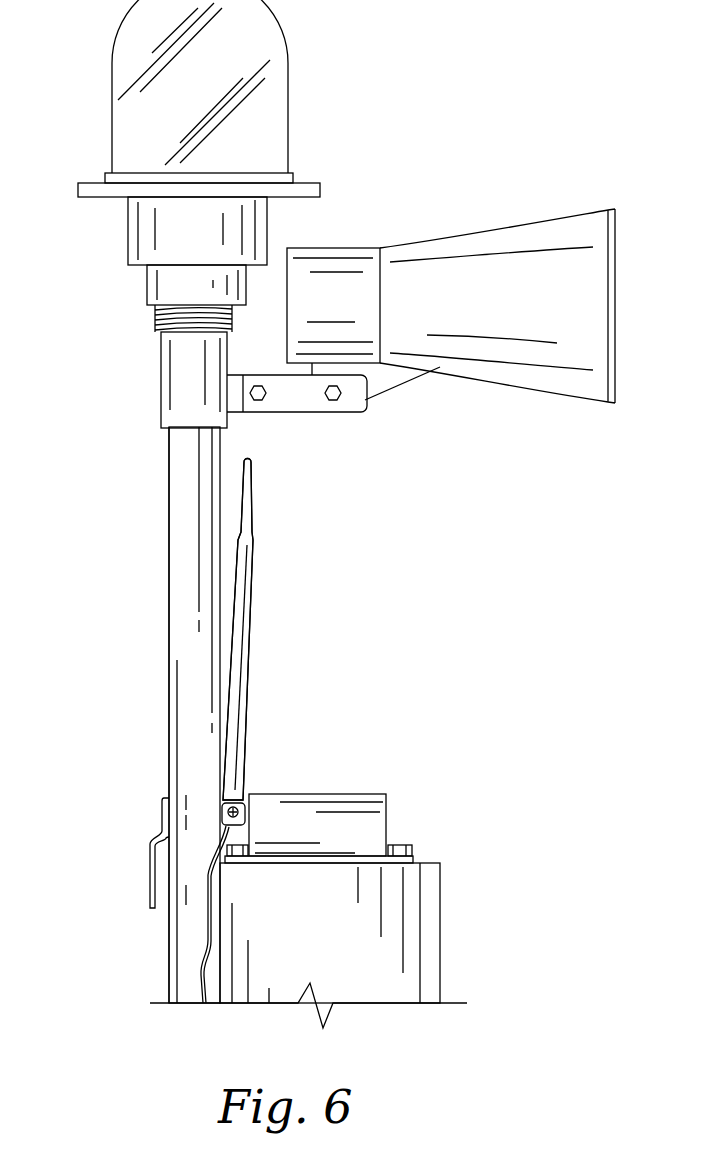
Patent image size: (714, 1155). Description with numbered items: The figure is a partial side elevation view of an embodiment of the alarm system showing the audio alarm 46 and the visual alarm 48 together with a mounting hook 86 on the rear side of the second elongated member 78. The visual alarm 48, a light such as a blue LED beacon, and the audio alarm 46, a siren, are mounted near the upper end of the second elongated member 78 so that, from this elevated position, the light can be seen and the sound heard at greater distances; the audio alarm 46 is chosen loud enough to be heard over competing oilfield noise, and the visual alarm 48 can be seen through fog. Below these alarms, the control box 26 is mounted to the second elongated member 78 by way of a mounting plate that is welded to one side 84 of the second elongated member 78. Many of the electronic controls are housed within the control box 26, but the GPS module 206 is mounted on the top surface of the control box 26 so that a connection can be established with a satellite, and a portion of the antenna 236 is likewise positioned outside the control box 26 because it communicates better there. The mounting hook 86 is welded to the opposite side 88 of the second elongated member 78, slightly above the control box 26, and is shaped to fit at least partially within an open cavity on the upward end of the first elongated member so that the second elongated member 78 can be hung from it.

The control box 26 is at (332, 958).
The audio alarm 46 is at (522, 247).
The visual alarm 48 is at (288, 115).
The second elongated member 78 is at (176, 636).
The side 84 is at (232, 682).
The mounting hook 86 is at (148, 878).
The side 88 is at (158, 720).
The GPS module 206 is at (318, 794).
The antenna 236 is at (252, 607).